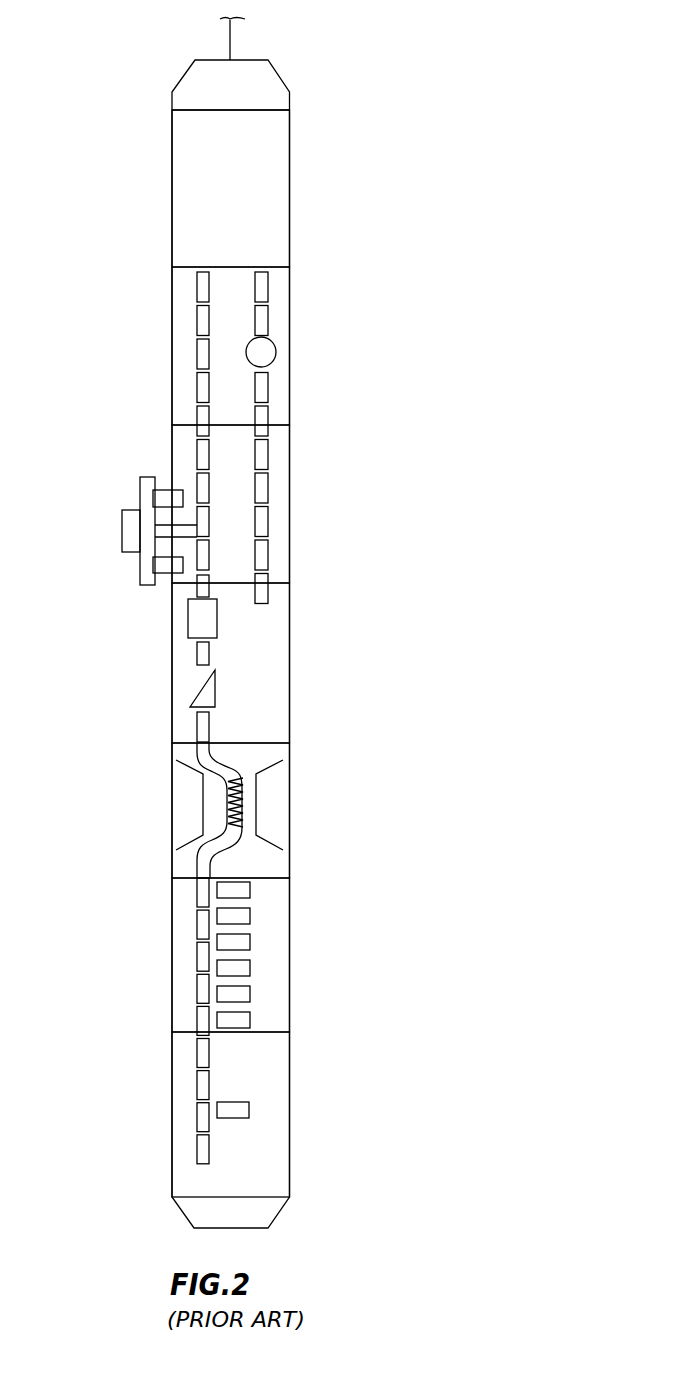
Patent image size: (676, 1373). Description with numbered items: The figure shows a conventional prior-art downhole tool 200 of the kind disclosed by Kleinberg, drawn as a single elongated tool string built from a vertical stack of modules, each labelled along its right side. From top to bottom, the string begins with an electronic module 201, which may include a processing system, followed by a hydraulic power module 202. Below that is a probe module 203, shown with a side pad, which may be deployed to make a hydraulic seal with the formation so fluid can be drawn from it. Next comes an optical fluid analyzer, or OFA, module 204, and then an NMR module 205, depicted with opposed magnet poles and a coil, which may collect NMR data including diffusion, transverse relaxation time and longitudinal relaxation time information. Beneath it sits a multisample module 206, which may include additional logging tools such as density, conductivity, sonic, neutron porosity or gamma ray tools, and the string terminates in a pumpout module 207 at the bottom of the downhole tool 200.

The downhole tool 200 is at (101, 43).
The electronic module 201 is at (272, 186).
The hydraulic power module 202 is at (277, 352).
The probe module 203 is at (282, 502).
The optical fluid analyzer (OFA) module 204 is at (275, 645).
The NMR module 205 is at (283, 785).
The multisample module 206 is at (272, 945).
The pumpout module 207 is at (270, 1088).